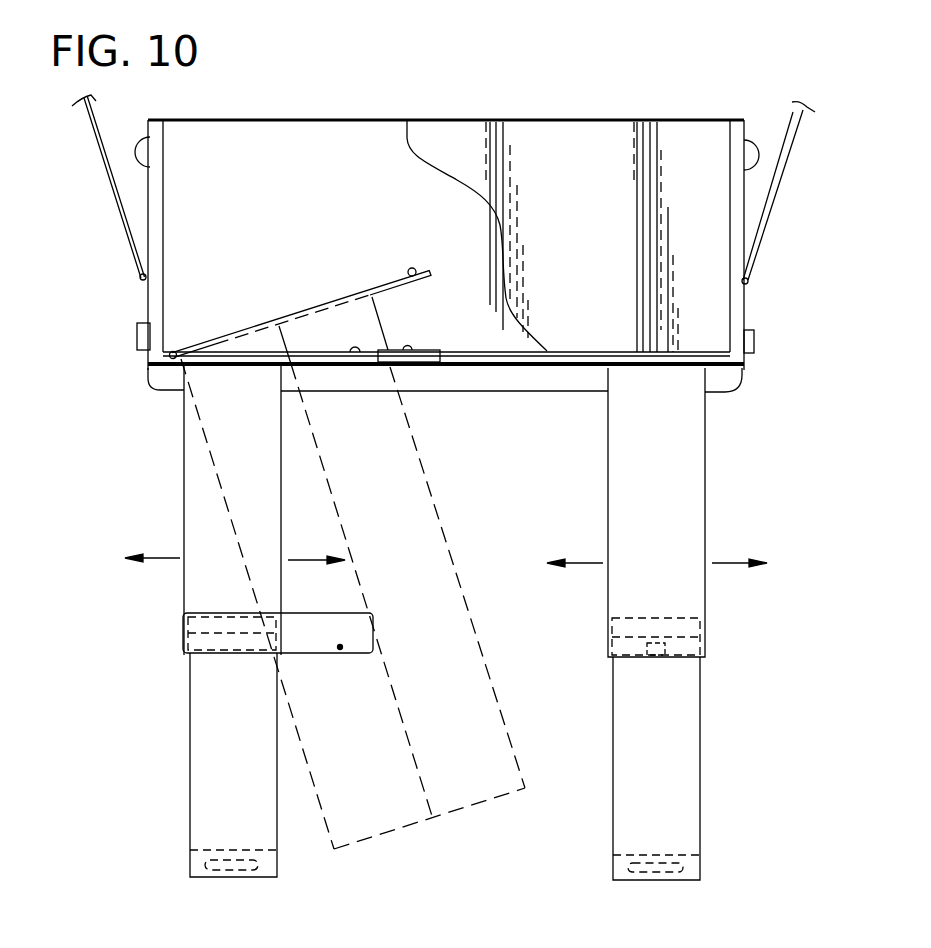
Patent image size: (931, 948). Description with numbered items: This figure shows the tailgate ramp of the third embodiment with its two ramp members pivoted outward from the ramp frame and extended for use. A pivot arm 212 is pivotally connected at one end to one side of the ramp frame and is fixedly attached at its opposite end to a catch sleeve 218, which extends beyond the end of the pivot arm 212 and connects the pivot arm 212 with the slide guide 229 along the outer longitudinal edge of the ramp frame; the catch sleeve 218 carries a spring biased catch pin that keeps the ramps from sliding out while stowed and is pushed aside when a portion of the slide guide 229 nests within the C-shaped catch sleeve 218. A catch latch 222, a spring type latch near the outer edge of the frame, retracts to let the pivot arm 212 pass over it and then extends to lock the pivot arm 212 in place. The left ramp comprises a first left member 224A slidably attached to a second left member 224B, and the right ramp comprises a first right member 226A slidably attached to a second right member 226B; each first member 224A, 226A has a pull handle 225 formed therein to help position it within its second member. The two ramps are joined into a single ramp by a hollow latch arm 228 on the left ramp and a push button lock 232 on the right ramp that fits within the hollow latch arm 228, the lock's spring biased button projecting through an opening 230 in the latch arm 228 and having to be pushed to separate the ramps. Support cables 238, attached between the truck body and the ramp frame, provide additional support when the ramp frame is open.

The pivot arm 212 is at (299, 311).
The catch sleeve 218 is at (422, 278).
The catch latch 222 is at (366, 350).
The first left member 224A is at (263, 733).
The second left member 224B is at (263, 470).
The pull handle 225 is at (252, 868).
The first right member 226A is at (687, 746).
The second right member 226B is at (687, 510).
The hollow latch arm 228 is at (333, 616).
The slide guide 229 is at (560, 357).
The opening 230 is at (340, 650).
The push button lock 232 is at (648, 646).
The support cables 238 is at (118, 218).